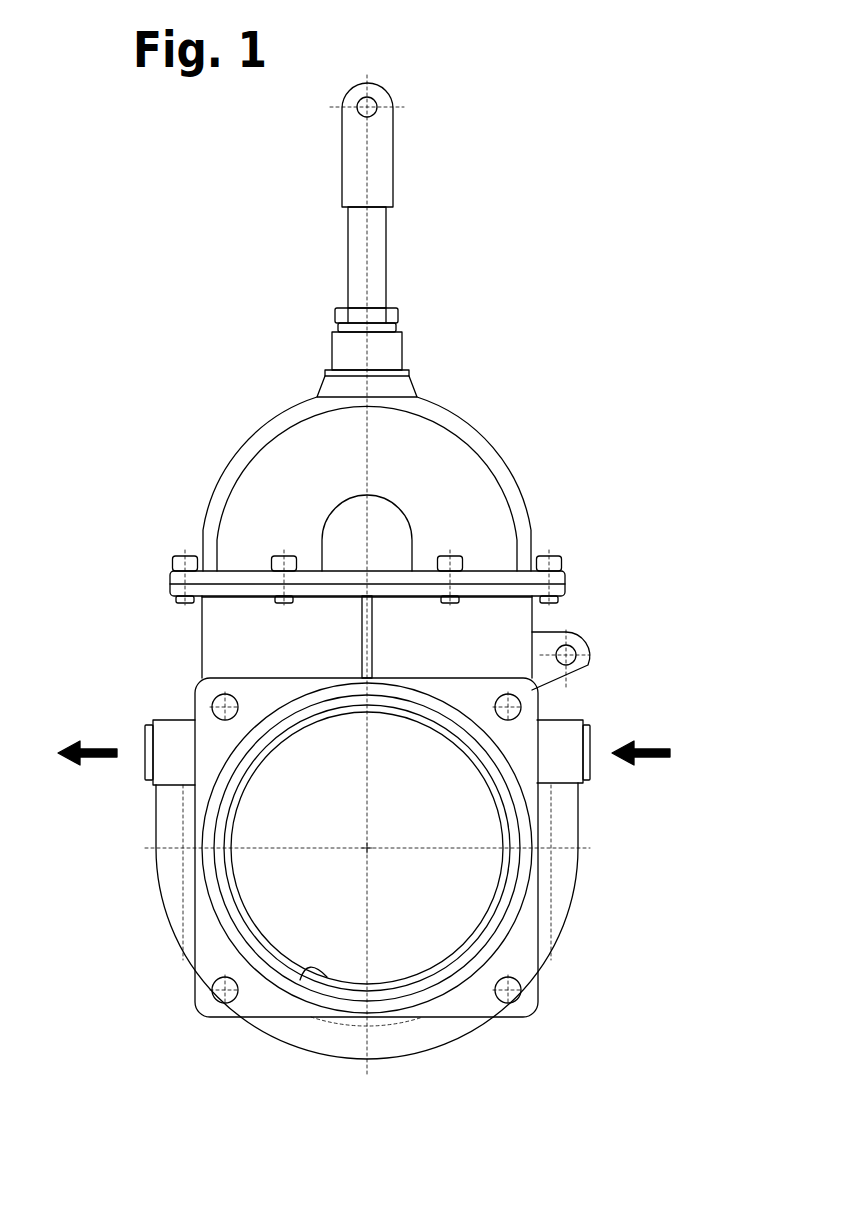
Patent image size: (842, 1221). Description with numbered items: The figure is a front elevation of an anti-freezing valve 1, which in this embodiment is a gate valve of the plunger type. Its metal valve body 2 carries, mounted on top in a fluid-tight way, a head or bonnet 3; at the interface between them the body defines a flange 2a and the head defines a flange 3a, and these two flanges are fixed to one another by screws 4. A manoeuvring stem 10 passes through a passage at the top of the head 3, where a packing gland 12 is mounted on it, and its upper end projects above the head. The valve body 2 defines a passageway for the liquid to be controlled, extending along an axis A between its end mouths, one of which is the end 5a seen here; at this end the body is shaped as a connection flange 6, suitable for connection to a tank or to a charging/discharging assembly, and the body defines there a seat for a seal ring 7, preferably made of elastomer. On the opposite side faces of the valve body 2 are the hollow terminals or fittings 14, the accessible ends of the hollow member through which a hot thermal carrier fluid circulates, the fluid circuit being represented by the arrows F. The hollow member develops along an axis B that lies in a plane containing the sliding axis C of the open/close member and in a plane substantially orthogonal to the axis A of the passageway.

The anti-freezing valve 1 is at (221, 313).
The manoeuvring stem 10 is at (390, 236).
The packing gland 12 is at (396, 318).
The head or bonnet 3 is at (458, 415).
The flange of the head 3a is at (483, 577).
The screws 4 is at (183, 558).
The valve body 2 is at (199, 663).
The flange of the valve body 2a is at (238, 592).
The hollow terminals or fittings 14 is at (139, 737).
The arrows representing thermal carrier fluid circuit F is at (366, 755).
The axis of the hollow member B is at (550, 832).
The connection flanges 6 is at (530, 998).
The seal ring 7 is at (386, 1000).
The axis of the open/close member C is at (367, 758).
The axis of the passageway A is at (367, 849).
The end of the passageway 5a is at (310, 964).